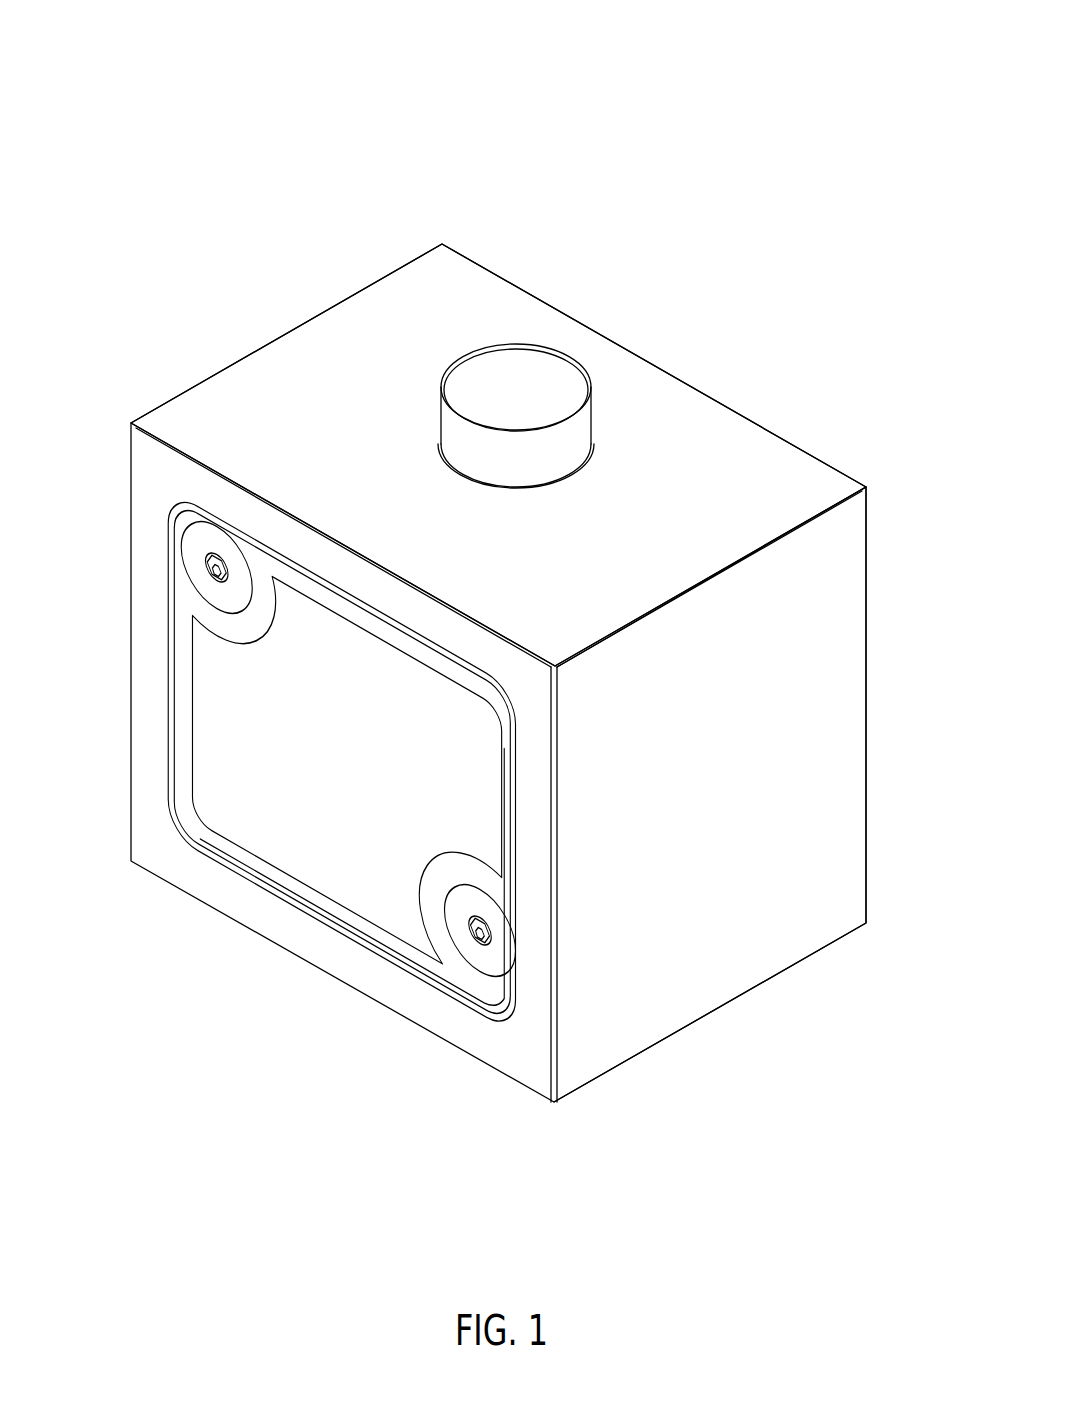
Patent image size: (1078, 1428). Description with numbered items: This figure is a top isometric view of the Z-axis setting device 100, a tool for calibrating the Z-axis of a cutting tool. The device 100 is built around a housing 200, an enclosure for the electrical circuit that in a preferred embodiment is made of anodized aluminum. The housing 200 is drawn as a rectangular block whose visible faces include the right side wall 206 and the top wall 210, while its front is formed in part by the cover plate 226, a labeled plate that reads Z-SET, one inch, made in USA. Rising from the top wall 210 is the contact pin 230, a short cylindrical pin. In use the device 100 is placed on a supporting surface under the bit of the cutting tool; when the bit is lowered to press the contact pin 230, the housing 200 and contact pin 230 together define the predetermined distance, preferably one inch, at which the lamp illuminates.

The Z-axis setting device 100 is at (127, 181).
The housing 200 is at (836, 478).
The right side wall 206 is at (840, 819).
The top wall 210 is at (480, 293).
The cover plate 226 is at (273, 850).
The contact pin 230 is at (583, 378).